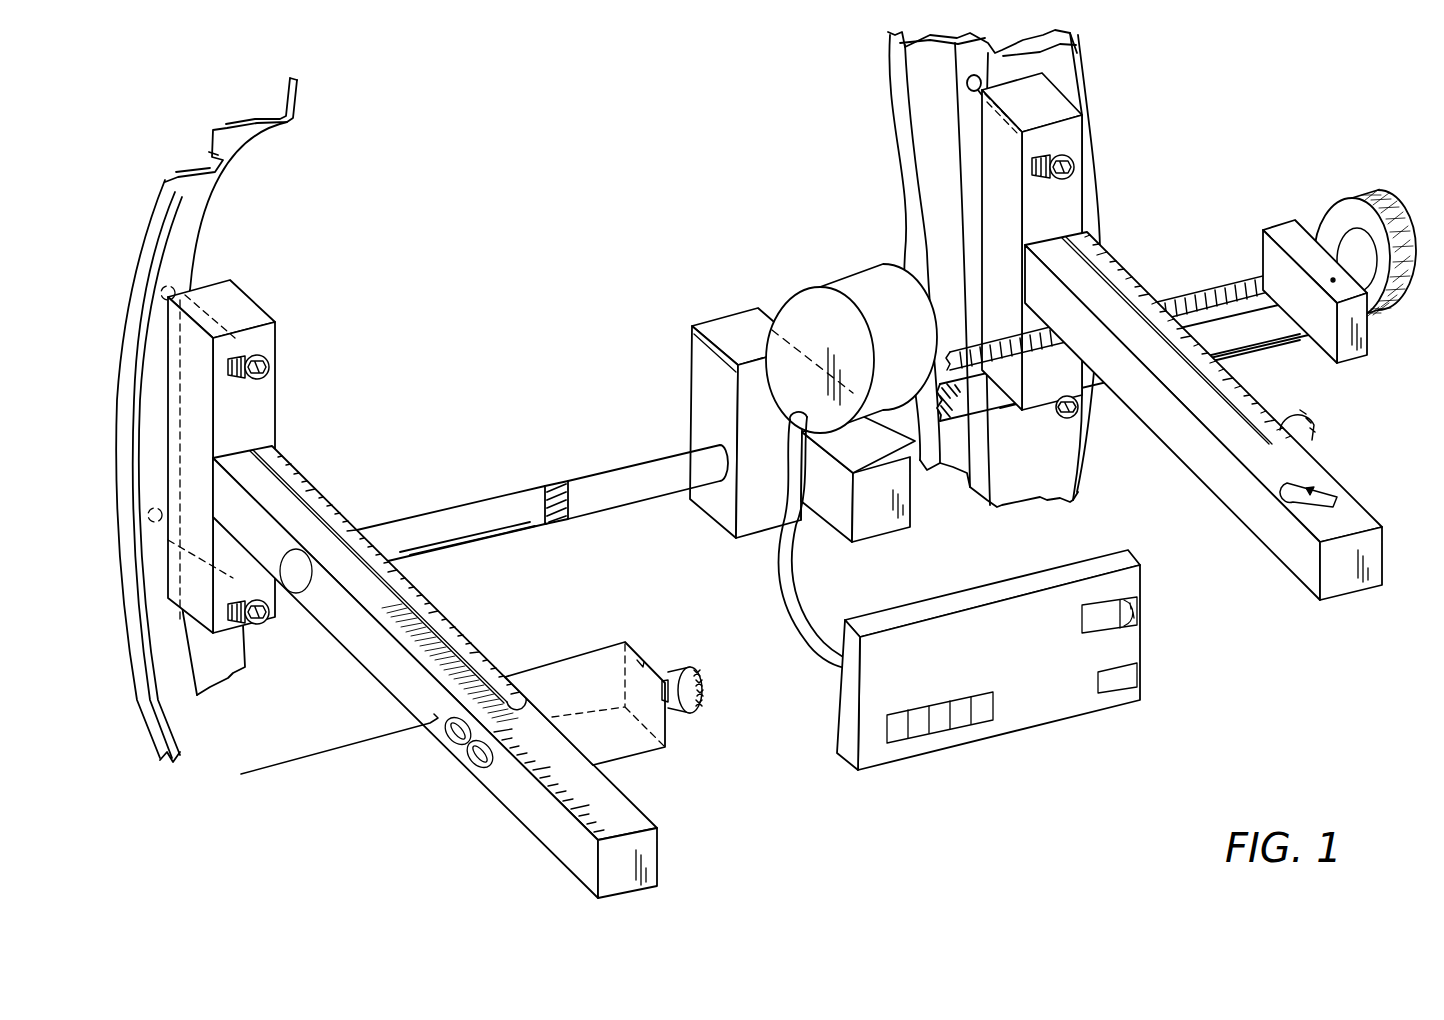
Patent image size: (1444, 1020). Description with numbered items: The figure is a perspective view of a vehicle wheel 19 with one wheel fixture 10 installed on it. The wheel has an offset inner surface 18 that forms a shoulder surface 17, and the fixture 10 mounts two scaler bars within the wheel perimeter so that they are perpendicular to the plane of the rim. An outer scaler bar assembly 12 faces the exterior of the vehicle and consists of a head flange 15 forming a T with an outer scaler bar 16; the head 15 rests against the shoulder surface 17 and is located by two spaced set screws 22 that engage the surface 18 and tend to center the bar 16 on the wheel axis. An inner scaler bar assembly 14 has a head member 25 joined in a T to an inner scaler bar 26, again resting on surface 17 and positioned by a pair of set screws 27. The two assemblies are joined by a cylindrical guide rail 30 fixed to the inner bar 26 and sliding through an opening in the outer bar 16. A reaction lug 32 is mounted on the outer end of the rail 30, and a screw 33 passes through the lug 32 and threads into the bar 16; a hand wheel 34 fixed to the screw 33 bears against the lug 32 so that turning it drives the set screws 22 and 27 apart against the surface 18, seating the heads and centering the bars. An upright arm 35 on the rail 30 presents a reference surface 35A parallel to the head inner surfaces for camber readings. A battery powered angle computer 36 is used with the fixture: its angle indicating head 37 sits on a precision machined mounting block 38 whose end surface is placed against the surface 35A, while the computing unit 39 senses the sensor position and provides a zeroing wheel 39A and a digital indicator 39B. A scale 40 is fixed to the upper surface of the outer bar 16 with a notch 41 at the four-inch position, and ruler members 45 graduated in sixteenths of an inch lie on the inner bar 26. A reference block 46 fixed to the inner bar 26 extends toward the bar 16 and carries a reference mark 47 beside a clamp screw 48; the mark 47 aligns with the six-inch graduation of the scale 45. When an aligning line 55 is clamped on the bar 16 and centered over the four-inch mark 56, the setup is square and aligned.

The fixture 10 is at (541, 418).
The outer scaler bar assembly 12 is at (1234, 546).
The inner scaler bar assembly 14 is at (672, 868).
The head flange 15 is at (1052, 102).
The outer scaler bar 16 is at (1352, 582).
The shoulder surface 17 is at (186, 217).
The offset inner surface 18 is at (190, 154).
The vehicle wheel 19 is at (312, 96).
The set screws 22 is at (1070, 157).
The head member 25 is at (240, 308).
The inner scaler bar 26 is at (517, 792).
The set screws 27 is at (272, 358).
The cylindrical guide rail 30 is at (487, 490).
The reaction lug 32 is at (1358, 355).
The screw 33 is at (1185, 293).
The hand wheel 34 is at (1373, 197).
The arm 35 is at (707, 372).
The reference surface 35A is at (755, 507).
The angle computer 36 is at (882, 588).
The angle indicating head 37 is at (793, 312).
The mounting block 38 is at (835, 508).
The computing unit 39 is at (1077, 713).
The zeroing wheel 39A is at (1143, 606).
The indicator 39B is at (945, 703).
The scale 40 is at (1313, 463).
The notch 41 is at (1247, 397).
The ruler members 45 is at (315, 487).
The reference block 46 is at (638, 733).
The reference mark 47 is at (642, 660).
The clamp screw 48 is at (690, 704).
The line 55 is at (276, 770).
The four-inch mark 56 is at (451, 621).